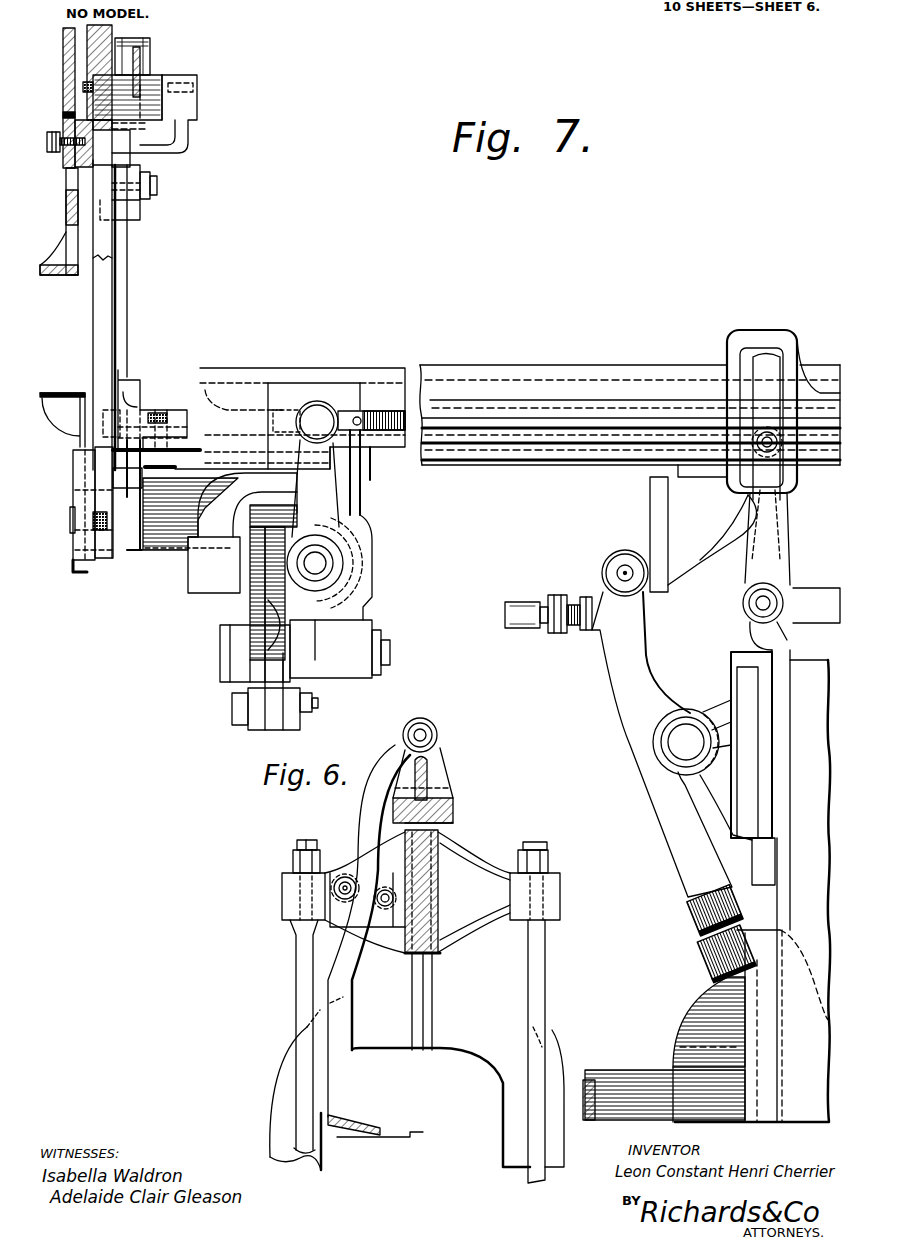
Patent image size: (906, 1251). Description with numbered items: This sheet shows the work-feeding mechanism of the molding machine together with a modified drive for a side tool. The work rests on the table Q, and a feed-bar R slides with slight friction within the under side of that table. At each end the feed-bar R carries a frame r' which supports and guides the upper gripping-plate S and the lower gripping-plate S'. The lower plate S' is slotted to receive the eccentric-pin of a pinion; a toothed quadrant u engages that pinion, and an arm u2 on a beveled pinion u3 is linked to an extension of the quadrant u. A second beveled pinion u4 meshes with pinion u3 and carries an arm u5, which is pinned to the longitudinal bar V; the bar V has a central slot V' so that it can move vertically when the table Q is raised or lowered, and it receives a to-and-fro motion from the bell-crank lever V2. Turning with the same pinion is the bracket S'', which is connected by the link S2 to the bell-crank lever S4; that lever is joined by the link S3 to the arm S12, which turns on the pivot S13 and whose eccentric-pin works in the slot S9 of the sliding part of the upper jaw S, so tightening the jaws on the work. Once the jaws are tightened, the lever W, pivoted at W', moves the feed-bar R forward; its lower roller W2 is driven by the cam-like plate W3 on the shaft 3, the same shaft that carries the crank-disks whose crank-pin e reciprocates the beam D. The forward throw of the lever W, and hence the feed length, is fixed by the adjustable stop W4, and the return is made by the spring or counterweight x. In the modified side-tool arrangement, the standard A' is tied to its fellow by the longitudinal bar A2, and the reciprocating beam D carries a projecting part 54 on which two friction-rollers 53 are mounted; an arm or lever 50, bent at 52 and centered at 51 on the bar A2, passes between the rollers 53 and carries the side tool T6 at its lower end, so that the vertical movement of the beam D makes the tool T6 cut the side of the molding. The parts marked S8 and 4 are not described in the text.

In FIG. 7, the upper gripping-plate S is at (59, 242).
In FIG. 7, the lower gripping-plate S' is at (67, 472).
In FIG. 7, the bracket S'' is at (187, 536).
In FIG. 7, the link S2 is at (118, 267).
In FIG. 7, the link S3 is at (112, 32).
In FIG. 7, the bell-crank lever S4 is at (134, 183).
In FIG. 7, the lower guide block S8 is at (70, 527).
In FIG. 7, the slot S9 is at (73, 111).
In FIG. 7, the arm S12 is at (137, 72).
In FIG. 7, the pivot S13 is at (176, 101).
In FIG. 7, the frame r' is at (85, 338).
In FIG. 7, the feed-bar R is at (178, 440).
In FIG. 7, the table Q is at (362, 368).
In FIG. 7, the spring or counterweight x is at (410, 397).
In FIG. 7, the toothed quadrant u is at (257, 642).
In FIG. 7, the arm u2 is at (258, 662).
In FIG. 7, the beveled pinion u3 is at (283, 608).
In FIG. 7, the beveled pinion u4 is at (302, 598).
In FIG. 7, the arm u5 is at (312, 499).
In FIG. 7, the longitudinal bar V is at (630, 440).
In FIG. 7, the slot or groove V' is at (759, 390).
In FIG. 7, the bell-crank lever V2 is at (757, 555).
In FIG. 7, the lever W is at (662, 687).
In FIG. 7, the pivot W' is at (661, 768).
In FIG. 7, the roller W2 is at (700, 934).
In FIG. 7, the cam-like plate W3 is at (680, 1010).
In FIG. 7, the stop W4 is at (530, 612).
In FIG. 7, the shaft 3 is at (632, 1093).
In FIG. 7, the crank-pin e is at (713, 88).
In FIG. 6, the center 51 is at (432, 727).
In FIG. 6, the longitudinal bar A2 is at (428, 775).
In FIG. 6, the reciprocating beam D is at (438, 853).
In FIG. 6, the cross yoke 4 is at (357, 898).
In FIG. 6, the bend 52 is at (360, 913).
In FIG. 6, the friction-rollers 53 is at (358, 876).
In FIG. 6, the arm or projecting part 54 is at (386, 908).
In FIG. 6, the arm or lever 50 is at (340, 1027).
In FIG. 6, the side tool T6 is at (362, 1123).
In FIG. 6, the standard A' is at (417, 1051).